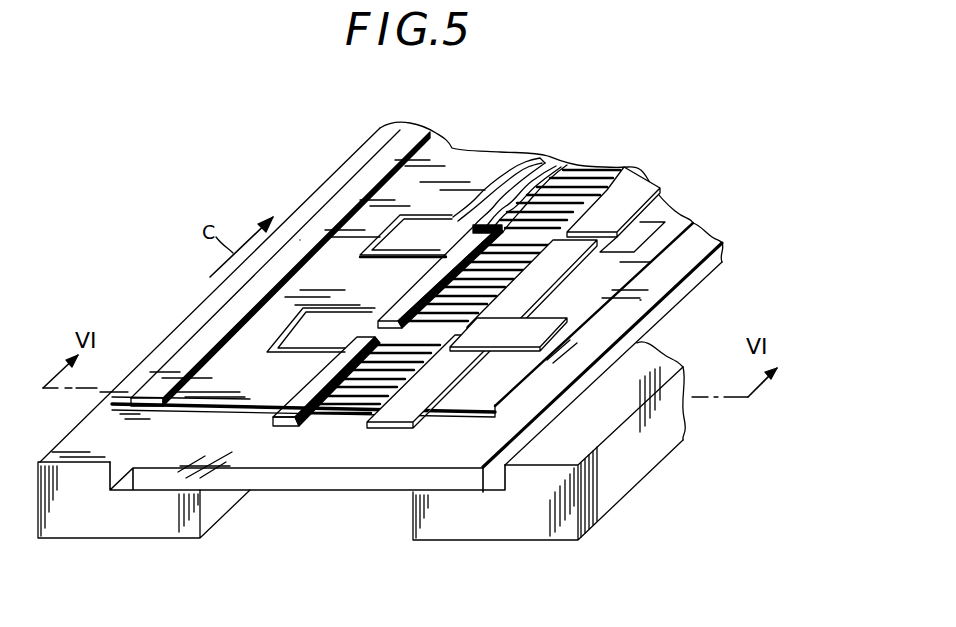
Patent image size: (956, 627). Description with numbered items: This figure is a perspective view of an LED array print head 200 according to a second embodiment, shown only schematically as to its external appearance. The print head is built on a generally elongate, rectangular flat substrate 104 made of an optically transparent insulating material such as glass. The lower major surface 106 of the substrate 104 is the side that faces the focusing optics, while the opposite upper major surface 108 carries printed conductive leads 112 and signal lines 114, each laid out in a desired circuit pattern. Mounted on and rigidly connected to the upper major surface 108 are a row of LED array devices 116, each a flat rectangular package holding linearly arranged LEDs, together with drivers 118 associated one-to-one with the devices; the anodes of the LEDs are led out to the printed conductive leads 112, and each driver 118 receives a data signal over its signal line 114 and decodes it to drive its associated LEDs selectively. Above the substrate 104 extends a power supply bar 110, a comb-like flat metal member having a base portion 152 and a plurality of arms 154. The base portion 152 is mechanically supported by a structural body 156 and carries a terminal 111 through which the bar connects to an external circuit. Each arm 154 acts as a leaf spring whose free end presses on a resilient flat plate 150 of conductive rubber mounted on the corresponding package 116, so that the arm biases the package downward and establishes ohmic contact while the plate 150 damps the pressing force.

The substrate 104 is at (317, 480).
The lower major surface 106 is at (690, 297).
The upper major surface 108 is at (692, 247).
The power supply bar 110 is at (238, 358).
The terminal 111 is at (307, 240).
The printed conductive leads 112 is at (572, 190).
The signal lines 114 is at (660, 185).
The LED array device 116 is at (557, 162).
The driver 118 is at (538, 282).
The resilient flat plate 150 is at (478, 210).
The base portion 152 is at (385, 165).
The arms 154 is at (480, 178).
The structural body 156 is at (145, 525).
The LED array print head 200 is at (191, 218).